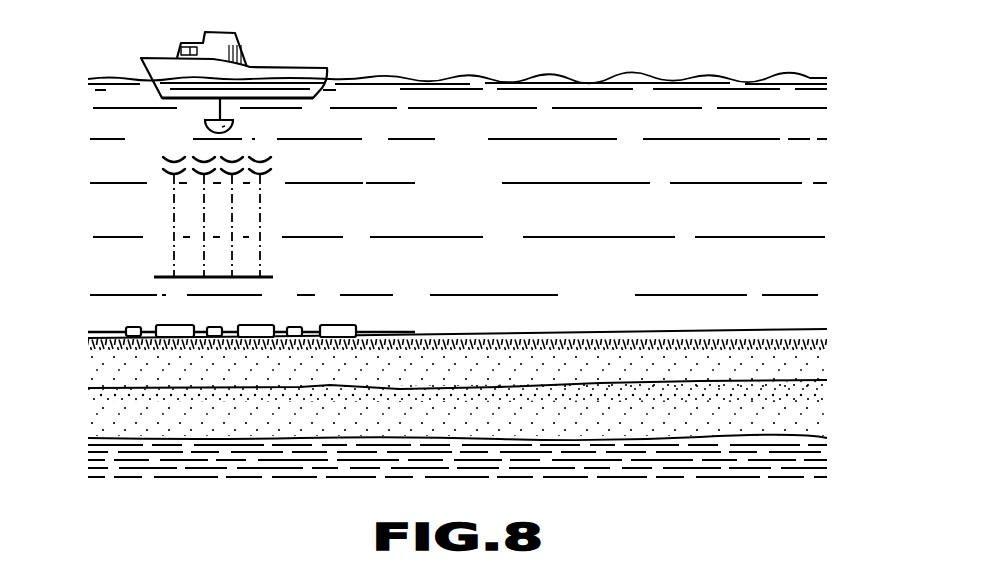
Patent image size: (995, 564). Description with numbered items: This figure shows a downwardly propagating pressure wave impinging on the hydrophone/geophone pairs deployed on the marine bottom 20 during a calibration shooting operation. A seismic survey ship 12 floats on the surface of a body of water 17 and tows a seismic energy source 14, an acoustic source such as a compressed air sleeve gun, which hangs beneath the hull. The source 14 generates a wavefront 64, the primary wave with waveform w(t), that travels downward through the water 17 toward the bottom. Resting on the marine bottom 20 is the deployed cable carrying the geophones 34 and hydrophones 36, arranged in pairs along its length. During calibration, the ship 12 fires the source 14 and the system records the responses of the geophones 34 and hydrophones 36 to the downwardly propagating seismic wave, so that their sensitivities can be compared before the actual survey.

The seismic survey ship 12 is at (244, 56).
The seismic energy source 14 is at (205, 125).
The body of water 17 is at (476, 177).
The marine bottom 20 is at (583, 334).
The geophones 34 is at (170, 339).
The hydrophones 36 is at (125, 326).
The wavefront 64 is at (268, 283).